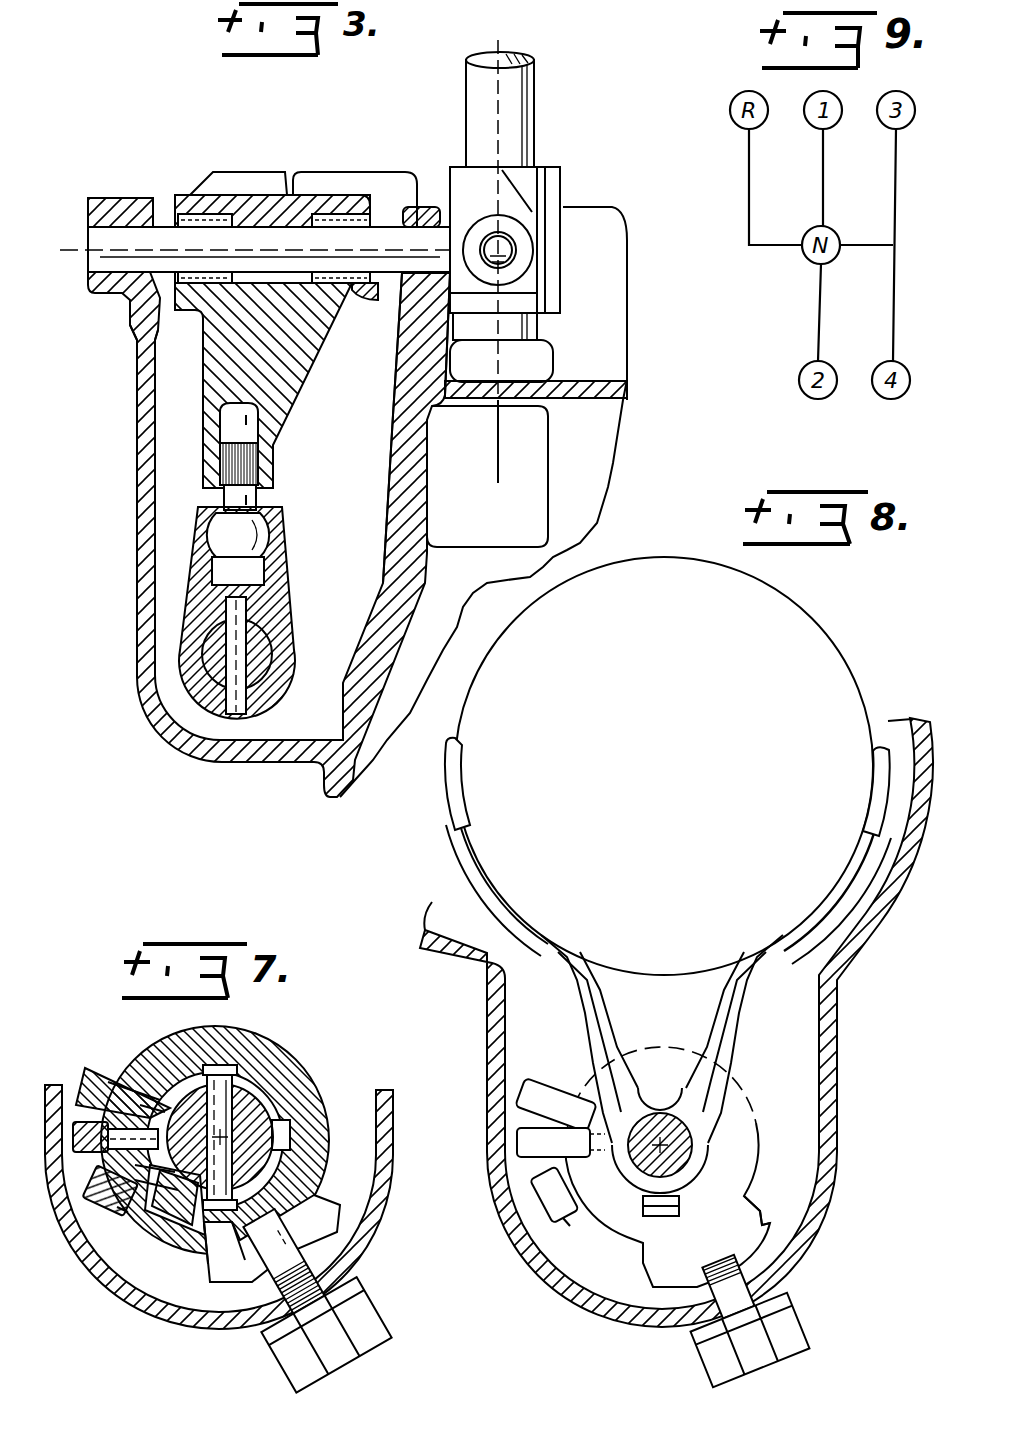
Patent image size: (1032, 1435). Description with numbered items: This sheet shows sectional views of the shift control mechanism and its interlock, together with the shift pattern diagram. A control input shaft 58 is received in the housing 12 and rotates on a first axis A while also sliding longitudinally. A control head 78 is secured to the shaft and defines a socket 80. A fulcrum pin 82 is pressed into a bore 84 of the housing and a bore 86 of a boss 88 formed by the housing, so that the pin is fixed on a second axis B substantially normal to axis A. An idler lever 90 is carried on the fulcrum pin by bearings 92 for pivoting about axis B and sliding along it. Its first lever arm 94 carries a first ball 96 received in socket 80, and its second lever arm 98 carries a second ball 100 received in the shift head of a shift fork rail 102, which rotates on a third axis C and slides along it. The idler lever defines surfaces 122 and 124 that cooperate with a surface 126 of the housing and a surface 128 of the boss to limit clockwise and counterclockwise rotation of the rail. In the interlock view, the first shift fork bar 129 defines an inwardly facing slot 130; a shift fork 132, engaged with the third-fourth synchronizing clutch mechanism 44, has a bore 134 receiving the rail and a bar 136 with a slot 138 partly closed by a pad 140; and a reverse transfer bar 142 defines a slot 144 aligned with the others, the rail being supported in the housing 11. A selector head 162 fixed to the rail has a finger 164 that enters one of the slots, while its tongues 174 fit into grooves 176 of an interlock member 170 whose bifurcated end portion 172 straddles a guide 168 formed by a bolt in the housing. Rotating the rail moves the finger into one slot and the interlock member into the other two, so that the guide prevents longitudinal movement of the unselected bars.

In FIG. 8, the housing 11 is at (850, 965).
In FIG. 7, the housing 11 is at (393, 1128).
In FIG. 3, the housing 12 is at (137, 445).
In FIG. 8, the third-fourth synchronizing clutch mechanism 44 is at (836, 648).
In FIG. 3, the control input shaft 58 is at (258, 672).
In FIG. 3, the control head 78 is at (285, 628).
In FIG. 3, the socket 80 is at (258, 575).
In FIG. 3, the fulcrum pin 82 is at (127, 295).
In FIG. 3, the bore 84 is at (108, 222).
In FIG. 3, the bore 86 is at (415, 208).
In FIG. 3, the boss 88 is at (412, 342).
In FIG. 3, the idler lever 90 is at (306, 366).
In FIG. 3, the bearings 92 is at (320, 215).
In FIG. 3, the first lever arm 94 is at (276, 468).
In FIG. 3, the first ball 96 is at (253, 538).
In FIG. 3, the second lever arm 98 is at (525, 215).
In FIG. 3, the second ball 100 is at (533, 250).
In FIG. 3, the shift fork rail 102 is at (524, 122).
In FIG. 8, the shift fork rail 102 is at (667, 1115).
In FIG. 7, the shift fork rail 102 is at (243, 1066).
In FIG. 3, the surface 122 is at (180, 298).
In FIG. 3, the surface 124 is at (357, 288).
In FIG. 3, the surface 126 is at (165, 200).
In FIG. 3, the surface 128 is at (387, 195).
In FIG. 8, the bar 129 is at (523, 1143).
In FIG. 7, the bar 129 is at (73, 1137).
In FIG. 7, the slot 130 is at (92, 1180).
In FIG. 8, the shift fork 132 is at (745, 1010).
In FIG. 8, the bore 134 is at (694, 1143).
In FIG. 8, the bar 136 is at (543, 1178).
In FIG. 7, the bar 136 is at (97, 1197).
In FIG. 7, the slot 138 is at (104, 1213).
In FIG. 8, the pad 140 is at (563, 1218).
In FIG. 7, the pad 140 is at (117, 1207).
In FIG. 8, the reverse transfer bar 142 is at (557, 1082).
In FIG. 7, the reverse transfer bar 142 is at (118, 1075).
In FIG. 7, the slot 144 is at (140, 1105).
In FIG. 7, the selector head 162 is at (262, 1088).
In FIG. 7, the finger 164 is at (108, 1082).
In FIG. 8, the guide 168 is at (700, 1312).
In FIG. 7, the guide 168 is at (266, 1275).
In FIG. 8, the interlock member 170 is at (758, 1123).
In FIG. 7, the interlock member 170 is at (230, 1040).
In FIG. 8, the bifurcated end portion 172 is at (759, 1222).
In FIG. 7, the bifurcated end portion 172 is at (314, 1244).
In FIG. 7, the tongues 174 is at (220, 1065).
In FIG. 7, the grooves 176 is at (190, 1058).
In FIG. 3, the first axis A is at (240, 655).
In FIG. 3, the second axis B is at (304, 249).
In FIG. 3, the third axis C is at (504, 54).
In FIG. 8, the third axis C is at (664, 1143).
In FIG. 7, the third axis C is at (224, 1135).